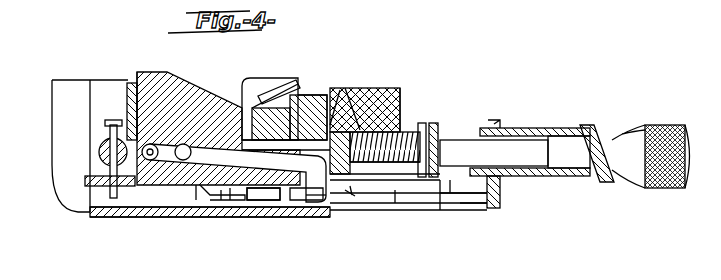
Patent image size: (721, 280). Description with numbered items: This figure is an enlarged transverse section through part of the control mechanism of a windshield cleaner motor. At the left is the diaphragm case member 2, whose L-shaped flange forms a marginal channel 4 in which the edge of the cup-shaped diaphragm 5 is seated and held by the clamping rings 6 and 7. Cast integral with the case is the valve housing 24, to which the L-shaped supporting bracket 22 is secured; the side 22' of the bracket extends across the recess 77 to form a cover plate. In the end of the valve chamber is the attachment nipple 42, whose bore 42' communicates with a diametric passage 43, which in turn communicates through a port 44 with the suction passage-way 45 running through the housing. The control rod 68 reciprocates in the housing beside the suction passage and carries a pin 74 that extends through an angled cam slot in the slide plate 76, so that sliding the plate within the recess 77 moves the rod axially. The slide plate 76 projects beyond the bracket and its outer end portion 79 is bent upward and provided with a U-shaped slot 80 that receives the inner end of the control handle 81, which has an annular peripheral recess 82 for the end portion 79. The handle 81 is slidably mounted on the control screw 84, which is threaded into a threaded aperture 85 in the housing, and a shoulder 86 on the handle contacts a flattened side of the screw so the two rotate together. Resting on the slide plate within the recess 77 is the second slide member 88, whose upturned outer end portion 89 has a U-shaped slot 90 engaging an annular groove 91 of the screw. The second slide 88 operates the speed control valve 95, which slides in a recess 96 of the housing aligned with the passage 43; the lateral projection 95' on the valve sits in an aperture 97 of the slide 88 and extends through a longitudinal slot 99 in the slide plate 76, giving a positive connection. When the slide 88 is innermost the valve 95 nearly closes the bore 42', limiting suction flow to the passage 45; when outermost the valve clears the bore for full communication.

The diaphragm case member 2 is at (412, 114).
The marginal channel 4 is at (243, 106).
The diaphragm 5 is at (262, 100).
The clamping ring 6 is at (260, 110).
The clamping ring 7 is at (311, 122).
The supporting bracket 22 is at (180, 168).
The side of supporting bracket 22' is at (268, 223).
The valve housing 24 is at (153, 88).
The attachment nipple 42 is at (174, 200).
The bore of attachment nipple 42' is at (208, 219).
The passage 43 is at (152, 162).
The port 44 is at (165, 138).
The suction passage-way 45 is at (130, 196).
The control rod 68 is at (99, 150).
The pin 74 is at (116, 181).
The slide plate 76 is at (452, 214).
The recess 77 is at (221, 202).
The outer end portion of slide 79 is at (502, 206).
The U-shaped slot 80 is at (496, 120).
The control handle 81 is at (618, 172).
The annular peripheral recess 82 is at (500, 178).
The control screw 84 is at (462, 139).
The threaded aperture 85 is at (372, 128).
The shoulder 86 is at (542, 136).
The second slide member 88 is at (398, 204).
The outer end portion of second slide 89 is at (452, 196).
The U-shaped slot 90 is at (432, 124).
The annular groove 91 is at (428, 150).
The speed control valve 95 is at (238, 173).
The lateral projection 95' is at (314, 225).
The recess 96 is at (230, 202).
The aperture 97 is at (328, 200).
The slot 99 is at (352, 198).